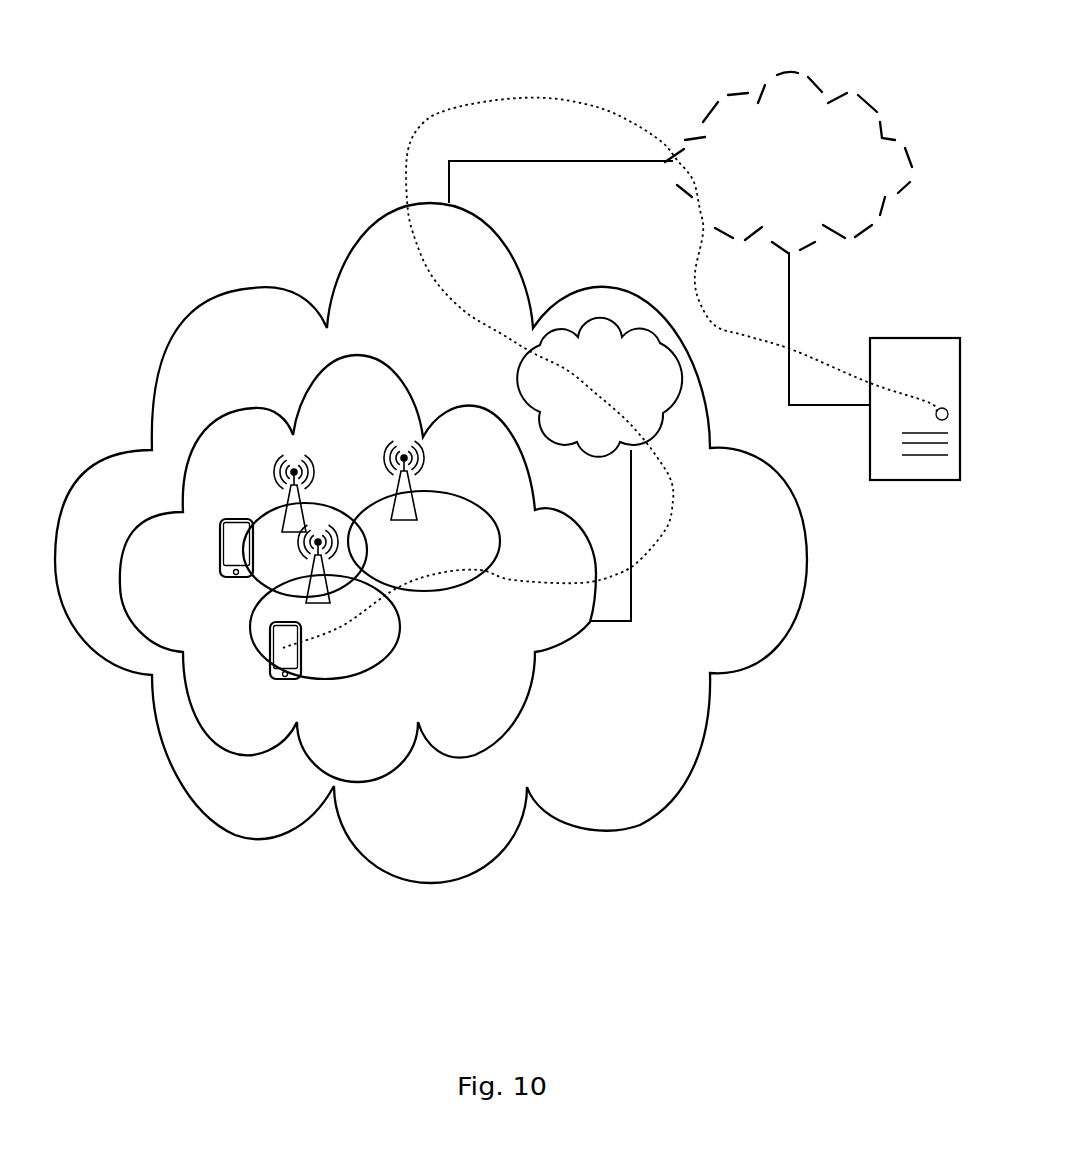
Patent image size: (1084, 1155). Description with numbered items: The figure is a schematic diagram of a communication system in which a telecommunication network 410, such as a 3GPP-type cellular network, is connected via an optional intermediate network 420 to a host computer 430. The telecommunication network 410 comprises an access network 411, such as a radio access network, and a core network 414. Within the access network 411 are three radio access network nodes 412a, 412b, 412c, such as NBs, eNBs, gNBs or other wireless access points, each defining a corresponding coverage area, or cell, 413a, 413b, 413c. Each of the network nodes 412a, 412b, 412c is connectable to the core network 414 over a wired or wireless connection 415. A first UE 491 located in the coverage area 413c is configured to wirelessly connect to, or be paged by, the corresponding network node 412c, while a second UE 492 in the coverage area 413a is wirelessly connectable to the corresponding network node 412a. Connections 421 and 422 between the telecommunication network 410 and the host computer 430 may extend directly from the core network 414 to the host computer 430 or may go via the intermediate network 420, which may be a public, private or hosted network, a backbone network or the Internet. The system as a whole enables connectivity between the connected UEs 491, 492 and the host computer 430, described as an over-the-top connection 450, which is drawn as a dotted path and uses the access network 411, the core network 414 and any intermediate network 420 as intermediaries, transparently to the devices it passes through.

The telecommunication network 410 is at (373, 315).
The access network 411 is at (331, 425).
The radio access network node 412a is at (325, 558).
The radio access network node 412b is at (422, 463).
The radio access network node 412c is at (285, 500).
The coverage area 413a is at (398, 642).
The coverage area 413b is at (462, 583).
The coverage area 413c is at (280, 503).
The core network 414 is at (625, 372).
The connection 415 is at (635, 582).
The intermediate network 420 is at (817, 177).
The connection 421 is at (572, 160).
The connection 422 is at (822, 405).
The host computer 430 is at (932, 480).
The over-the-top connection 450 is at (440, 120).
The first UE 491 is at (247, 574).
The second UE 492 is at (277, 680).